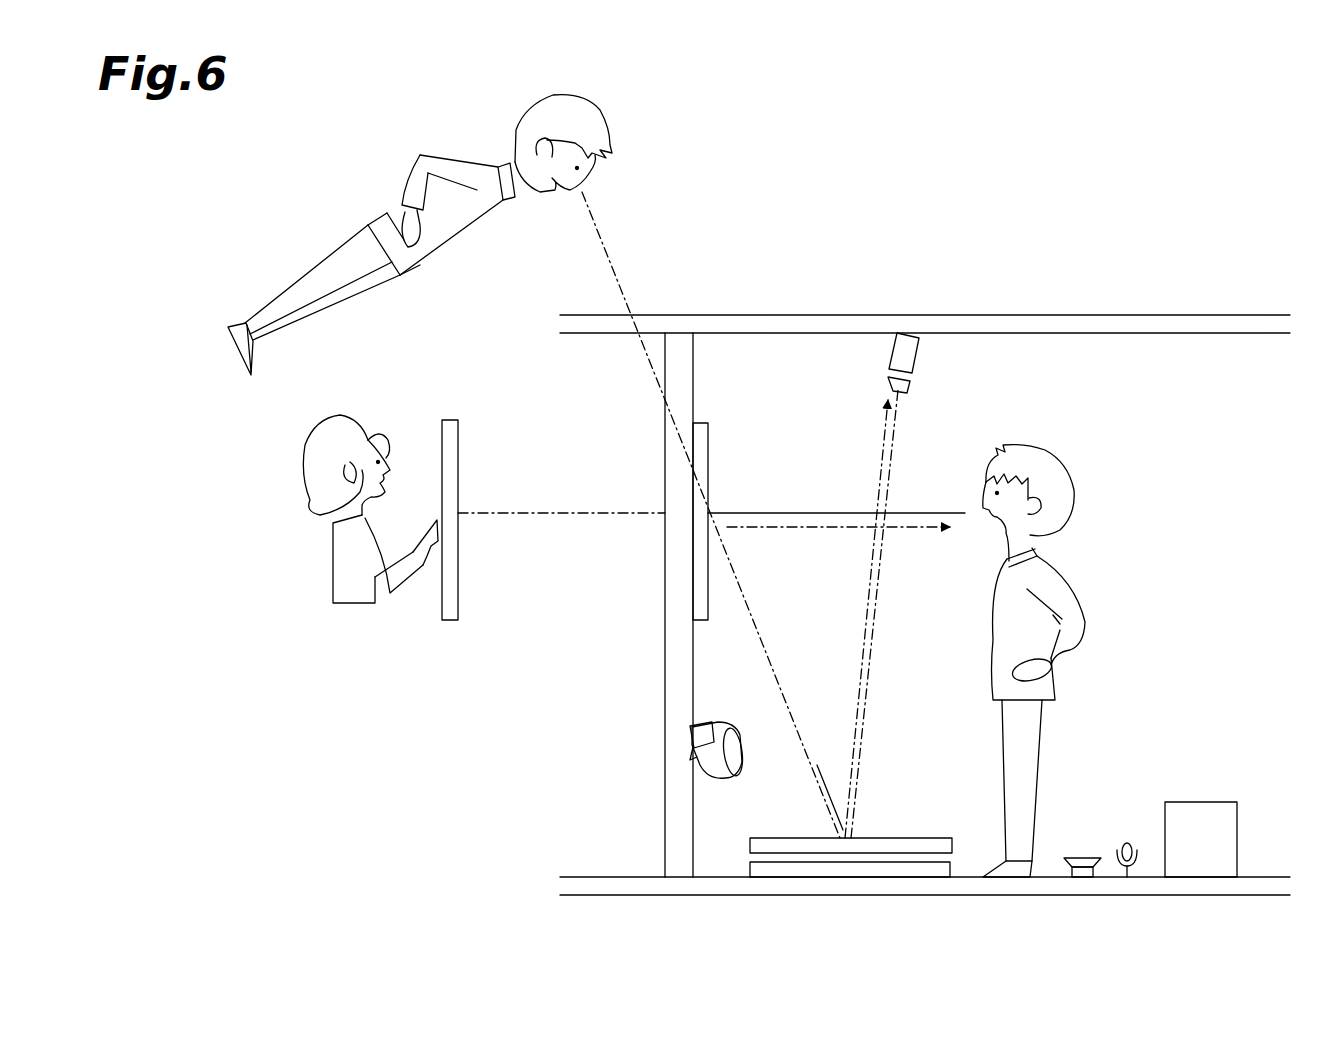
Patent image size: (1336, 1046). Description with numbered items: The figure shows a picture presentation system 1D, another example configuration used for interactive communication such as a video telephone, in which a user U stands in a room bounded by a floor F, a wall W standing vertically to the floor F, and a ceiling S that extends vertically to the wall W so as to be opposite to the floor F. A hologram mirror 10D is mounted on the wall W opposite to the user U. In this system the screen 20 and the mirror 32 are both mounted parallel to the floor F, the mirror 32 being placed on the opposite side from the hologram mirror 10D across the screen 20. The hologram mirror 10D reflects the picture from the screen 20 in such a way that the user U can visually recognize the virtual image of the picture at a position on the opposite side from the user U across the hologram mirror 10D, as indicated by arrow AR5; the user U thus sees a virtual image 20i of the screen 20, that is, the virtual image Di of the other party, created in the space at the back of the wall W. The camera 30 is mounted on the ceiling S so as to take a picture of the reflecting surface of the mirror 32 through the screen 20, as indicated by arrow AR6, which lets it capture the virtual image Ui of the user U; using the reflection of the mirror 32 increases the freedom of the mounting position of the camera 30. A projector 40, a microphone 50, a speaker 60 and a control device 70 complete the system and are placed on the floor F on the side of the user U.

The picture presentation system 1D is at (1160, 222).
The ceiling S is at (816, 326).
The floor F is at (805, 897).
The wall W is at (694, 352).
The hologram mirror 10D is at (709, 434).
The virtual image of the screen 20i is at (459, 440).
The screen 20 is at (918, 838).
The mirror 32 is at (877, 880).
The camera 30 is at (918, 360).
The projector 40 is at (733, 725).
The microphone 50 is at (1128, 840).
The speaker 60 is at (1086, 856).
The control device 70 is at (1238, 822).
The user U is at (1078, 444).
The virtual image of the user Ui is at (322, 224).
The virtual image of the other party Di is at (393, 424).
The arrow AR5 is at (842, 547).
The arrow AR6 is at (863, 614).